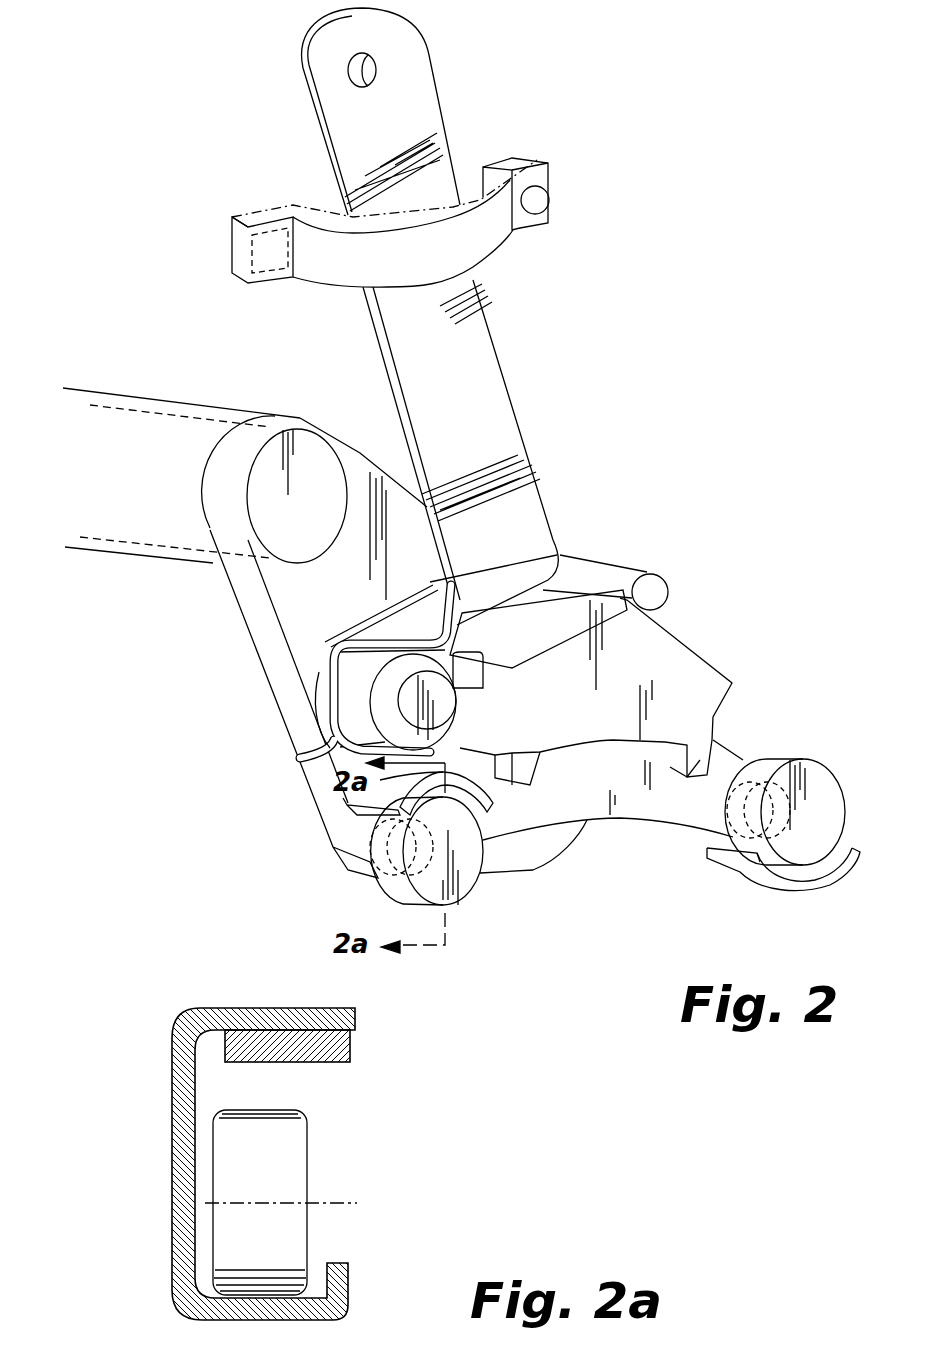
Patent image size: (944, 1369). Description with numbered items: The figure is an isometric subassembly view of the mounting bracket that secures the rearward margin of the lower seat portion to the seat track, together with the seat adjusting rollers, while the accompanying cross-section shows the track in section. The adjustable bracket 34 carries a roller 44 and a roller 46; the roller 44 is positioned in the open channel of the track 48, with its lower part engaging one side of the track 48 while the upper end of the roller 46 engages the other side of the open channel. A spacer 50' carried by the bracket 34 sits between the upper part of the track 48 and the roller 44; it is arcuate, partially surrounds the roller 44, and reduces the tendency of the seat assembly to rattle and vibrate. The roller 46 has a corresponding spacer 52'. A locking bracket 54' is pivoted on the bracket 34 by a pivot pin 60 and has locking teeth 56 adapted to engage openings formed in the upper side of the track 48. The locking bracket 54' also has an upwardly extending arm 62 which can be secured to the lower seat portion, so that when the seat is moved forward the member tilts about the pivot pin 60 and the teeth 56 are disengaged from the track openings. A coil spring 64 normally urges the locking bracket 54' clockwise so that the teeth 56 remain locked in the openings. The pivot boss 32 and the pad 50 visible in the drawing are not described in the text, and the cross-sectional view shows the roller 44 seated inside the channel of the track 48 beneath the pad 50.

In FIG. 2, the pivot boss 32 is at (313, 483).
In FIG. 2, the adjustable bracket 34 is at (298, 620).
In FIG. 2, the roller 44 is at (426, 851).
In FIG. 2A, the roller 44 is at (293, 1150).
In FIG. 2, the roller 46 is at (823, 782).
In FIG. 2A, the track 48 is at (272, 1008).
In FIG. 2A, the pad 50 is at (346, 1058).
In FIG. 2, the spacer 50' is at (484, 857).
In FIG. 2, the spacer 52' is at (800, 896).
In FIG. 2, the locking bracket 54' is at (639, 666).
In FIG. 2, the locking teeth 56 is at (690, 777).
In FIG. 2, the pivot pin 60 is at (450, 703).
In FIG. 2, the arm 62 is at (500, 418).
In FIG. 2, the coil spring 64 is at (327, 717).